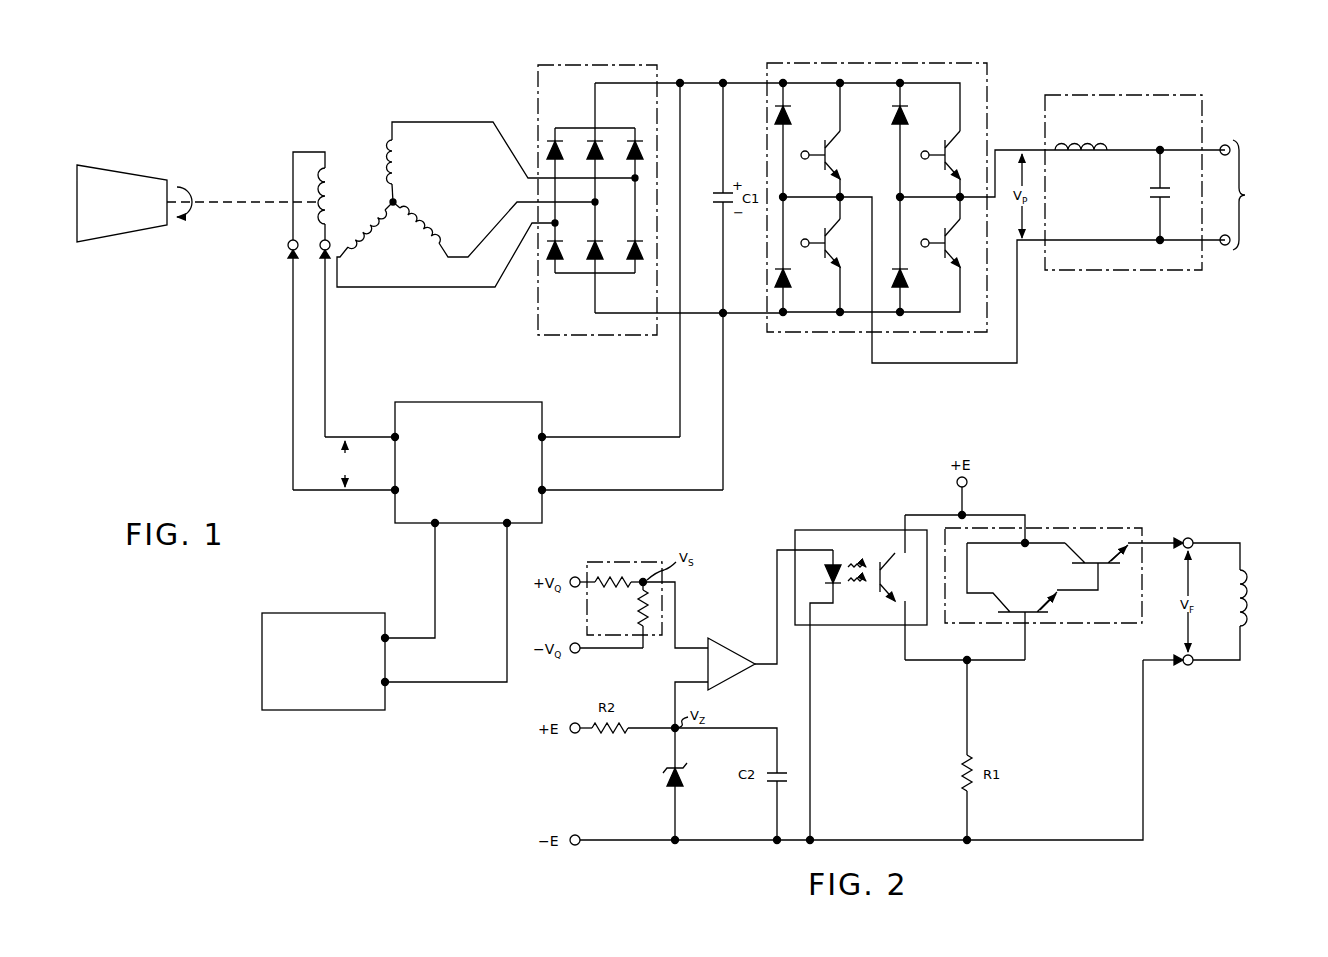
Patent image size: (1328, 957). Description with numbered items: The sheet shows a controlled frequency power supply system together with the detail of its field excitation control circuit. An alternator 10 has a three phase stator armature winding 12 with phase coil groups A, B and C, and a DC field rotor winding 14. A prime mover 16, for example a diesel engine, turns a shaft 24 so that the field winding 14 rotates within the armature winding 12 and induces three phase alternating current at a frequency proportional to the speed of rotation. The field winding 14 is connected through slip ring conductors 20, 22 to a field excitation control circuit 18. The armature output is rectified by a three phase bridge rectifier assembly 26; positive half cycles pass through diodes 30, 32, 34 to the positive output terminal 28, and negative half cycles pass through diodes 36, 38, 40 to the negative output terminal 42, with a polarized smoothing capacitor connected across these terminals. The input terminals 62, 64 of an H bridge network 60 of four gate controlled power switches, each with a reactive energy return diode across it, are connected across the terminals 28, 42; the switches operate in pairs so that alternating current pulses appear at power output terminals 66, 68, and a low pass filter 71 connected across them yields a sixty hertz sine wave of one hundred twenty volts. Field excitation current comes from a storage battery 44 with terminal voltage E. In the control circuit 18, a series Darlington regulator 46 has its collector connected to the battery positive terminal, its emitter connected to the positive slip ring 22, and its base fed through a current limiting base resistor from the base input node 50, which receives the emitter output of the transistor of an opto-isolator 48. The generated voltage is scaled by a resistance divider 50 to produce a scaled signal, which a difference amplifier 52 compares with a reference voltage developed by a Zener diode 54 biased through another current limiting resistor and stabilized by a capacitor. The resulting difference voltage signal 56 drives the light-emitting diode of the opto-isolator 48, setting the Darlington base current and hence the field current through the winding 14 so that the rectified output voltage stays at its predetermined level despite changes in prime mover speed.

In FIG. 1, the alternator 10 is at (486, 185).
In FIG. 1, the stator armature winding 12 is at (414, 197).
In FIG. 1, the field rotor winding 14 is at (340, 187).
In FIG. 2, the field rotor winding 14 is at (1257, 593).
In FIG. 1, the prime mover 16 is at (108, 164).
In FIG. 1, the field excitation control circuit 18 is at (456, 400).
In FIG. 2, the field excitation control circuit 18 is at (1066, 507).
In FIG. 1, the slip ring conductor 20 is at (289, 241).
In FIG. 2, the slip ring conductor 20 is at (1189, 668).
In FIG. 1, the slip ring conductor 22 is at (332, 238).
In FIG. 2, the slip ring conductor 22 is at (1189, 540).
In FIG. 1, the shaft 24 is at (240, 201).
In FIG. 1, the three phase bridge rectifier assembly 26 is at (577, 194).
In FIG. 1, the positive output terminal 28 is at (726, 84).
In FIG. 1, the diode 30 is at (546, 150).
In FIG. 1, the diode 32 is at (587, 146).
In FIG. 1, the diode 34 is at (634, 147).
In FIG. 1, the diode 36 is at (551, 261).
In FIG. 1, the diode 38 is at (591, 261).
In FIG. 1, the diode 40 is at (634, 261).
In FIG. 1, the negative output terminal 42 is at (725, 316).
In FIG. 1, the storage battery 44 is at (262, 640).
In FIG. 2, the series Darlington regulator 46 is at (1090, 528).
In FIG. 2, the opto-isolator 48 is at (837, 531).
In FIG. 2, the resistance divider / base input node 50 is at (616, 563).
In FIG. 2, the difference amplifier 52 is at (727, 652).
In FIG. 2, the Zener diode 54 is at (681, 783).
In FIG. 2, the difference voltage signal 56 is at (777, 590).
In FIG. 1, the H bridge network 60 is at (996, 209).
In FIG. 1, the input terminal 62 is at (749, 82).
In FIG. 1, the input terminal 64 is at (754, 316).
In FIG. 1, the power output terminal 66 is at (959, 196).
In FIG. 1, the power output terminal 68 is at (848, 197).
In FIG. 1, the low pass filter 71 is at (1183, 95).